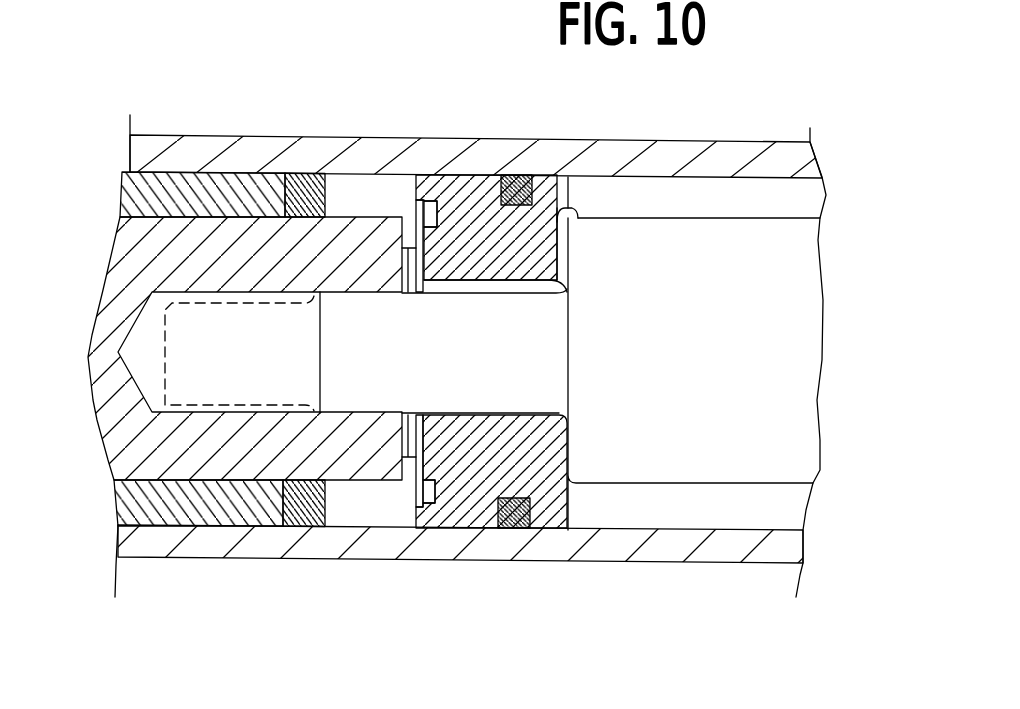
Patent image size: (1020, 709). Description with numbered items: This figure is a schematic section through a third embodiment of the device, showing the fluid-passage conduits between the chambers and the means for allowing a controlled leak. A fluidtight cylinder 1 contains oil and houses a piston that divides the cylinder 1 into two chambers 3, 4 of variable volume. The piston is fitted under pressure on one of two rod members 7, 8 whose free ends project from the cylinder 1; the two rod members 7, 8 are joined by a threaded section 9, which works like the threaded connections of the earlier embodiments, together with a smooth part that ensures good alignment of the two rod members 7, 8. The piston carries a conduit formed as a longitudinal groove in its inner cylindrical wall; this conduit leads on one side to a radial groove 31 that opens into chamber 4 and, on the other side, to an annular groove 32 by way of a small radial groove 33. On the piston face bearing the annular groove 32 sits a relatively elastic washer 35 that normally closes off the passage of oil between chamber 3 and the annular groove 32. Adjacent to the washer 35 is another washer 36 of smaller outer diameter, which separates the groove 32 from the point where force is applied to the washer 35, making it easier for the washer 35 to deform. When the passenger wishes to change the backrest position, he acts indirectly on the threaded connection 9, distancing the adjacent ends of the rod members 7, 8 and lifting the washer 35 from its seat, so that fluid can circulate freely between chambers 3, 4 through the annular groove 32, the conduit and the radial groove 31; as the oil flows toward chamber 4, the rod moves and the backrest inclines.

The fluidtight cylinder 1 is at (238, 142).
The chamber 3 is at (394, 190).
The chamber 4 is at (773, 193).
The rod member 7 is at (130, 248).
The rod member 8 is at (783, 367).
The threaded section 9 is at (169, 353).
The radial groove 31 is at (563, 222).
The annular groove 32 is at (432, 212).
The small radial groove 33 is at (442, 220).
The elastic washer 35 is at (418, 482).
The washer 36 is at (405, 443).